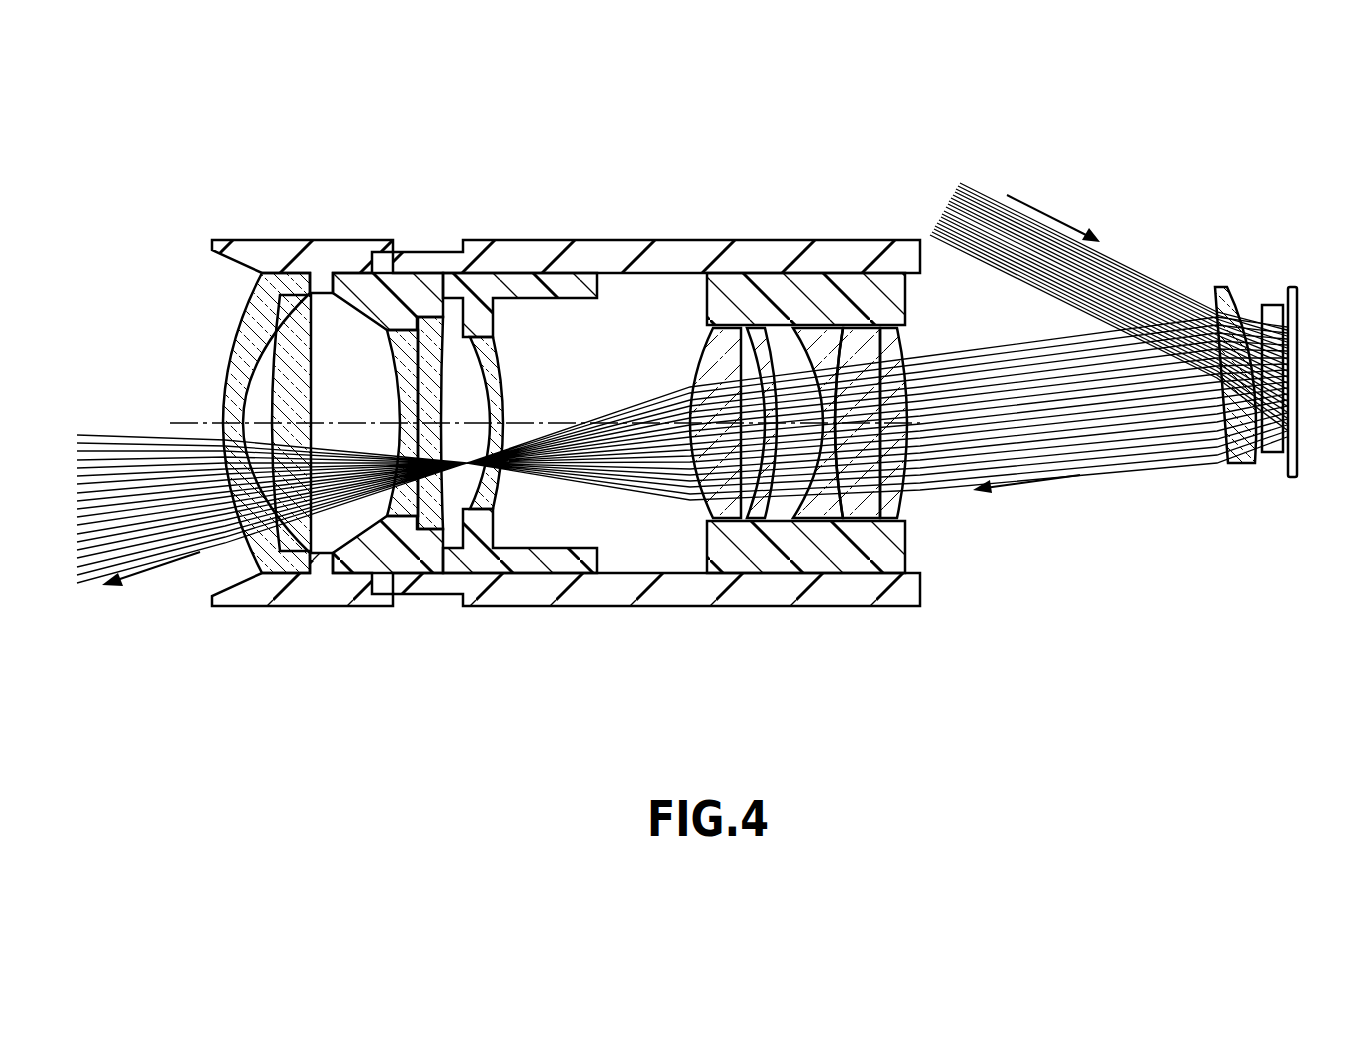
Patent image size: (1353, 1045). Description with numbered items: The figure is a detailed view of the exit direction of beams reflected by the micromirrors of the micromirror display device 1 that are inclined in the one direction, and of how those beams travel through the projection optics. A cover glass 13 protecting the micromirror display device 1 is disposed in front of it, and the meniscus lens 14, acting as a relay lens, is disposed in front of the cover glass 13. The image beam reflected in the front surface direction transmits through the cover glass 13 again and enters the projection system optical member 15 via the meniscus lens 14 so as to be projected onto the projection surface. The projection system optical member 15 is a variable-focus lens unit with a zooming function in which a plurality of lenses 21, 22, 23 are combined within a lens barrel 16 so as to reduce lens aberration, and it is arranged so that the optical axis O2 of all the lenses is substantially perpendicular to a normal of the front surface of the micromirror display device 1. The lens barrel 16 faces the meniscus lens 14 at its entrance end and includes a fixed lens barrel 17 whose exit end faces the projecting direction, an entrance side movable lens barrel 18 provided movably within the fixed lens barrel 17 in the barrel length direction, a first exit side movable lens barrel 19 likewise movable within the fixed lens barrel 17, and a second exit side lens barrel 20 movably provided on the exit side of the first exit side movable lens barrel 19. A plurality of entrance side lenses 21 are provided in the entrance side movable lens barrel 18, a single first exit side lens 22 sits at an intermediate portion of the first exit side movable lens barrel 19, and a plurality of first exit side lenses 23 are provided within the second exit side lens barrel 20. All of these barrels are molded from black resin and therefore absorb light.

The micromirror display device 1 is at (1297, 300).
The cover glass 13 is at (1278, 303).
The meniscus lens 14 is at (1232, 286).
The projection system optical member 15 is at (566, 464).
The lens barrel 16 is at (516, 610).
The fixed lens barrel 17 is at (695, 258).
The entrance side movable lens barrel 18 is at (820, 288).
The first exit side movable lens barrel 19 is at (520, 288).
The second exit side lens barrel 20 is at (307, 252).
The entrance side lenses 21 is at (785, 522).
The first exit side lens 22 is at (497, 560).
The first exit side lenses 23 is at (323, 562).
The optical axis O2 is at (575, 421).